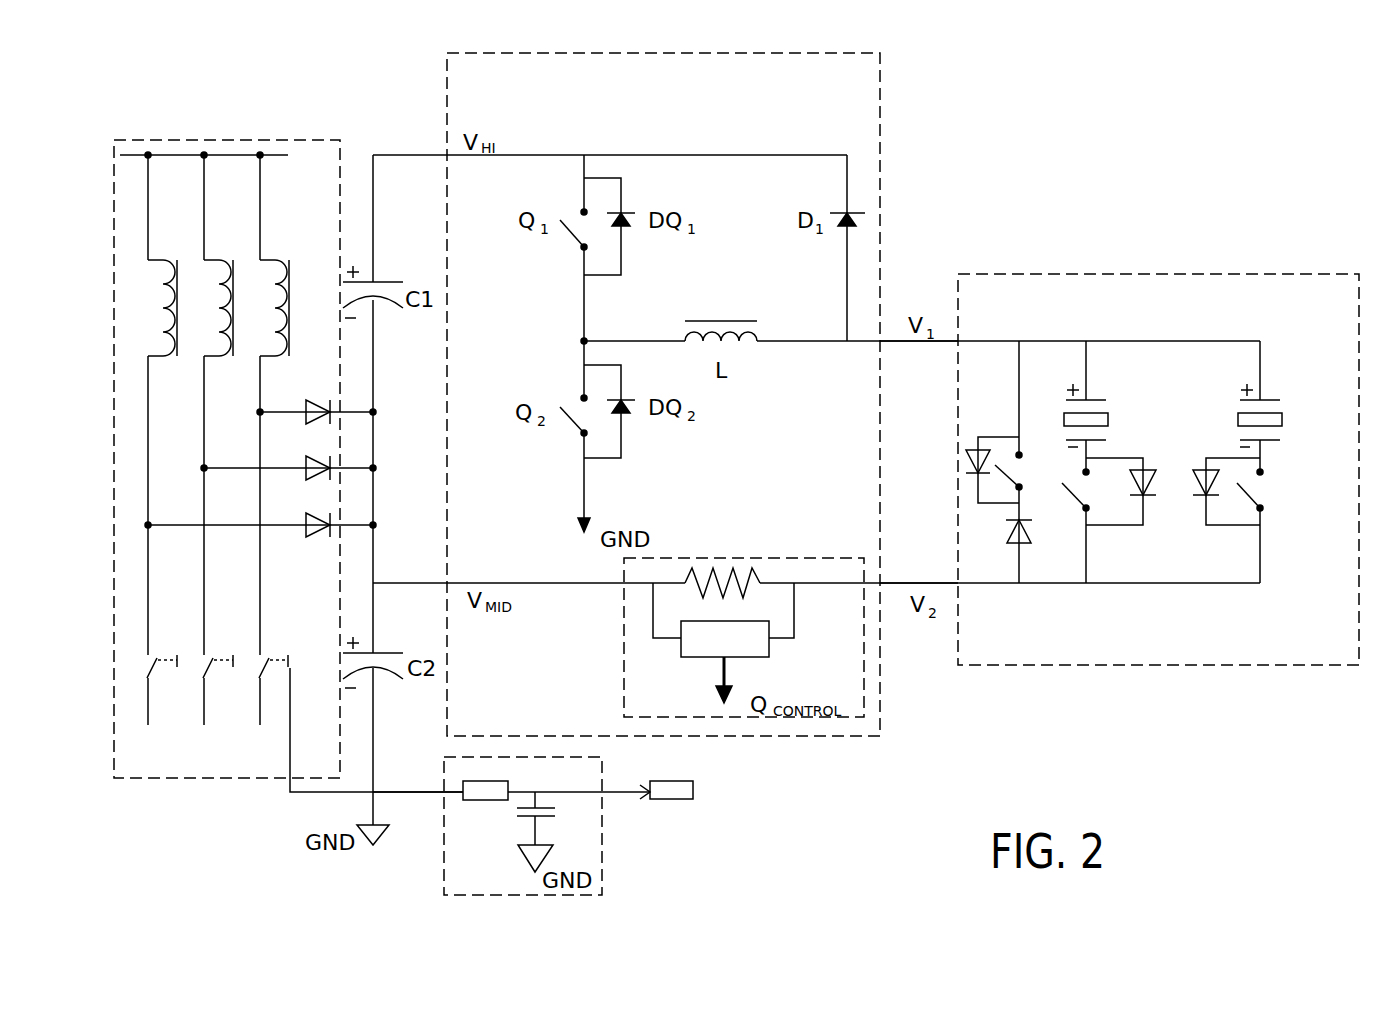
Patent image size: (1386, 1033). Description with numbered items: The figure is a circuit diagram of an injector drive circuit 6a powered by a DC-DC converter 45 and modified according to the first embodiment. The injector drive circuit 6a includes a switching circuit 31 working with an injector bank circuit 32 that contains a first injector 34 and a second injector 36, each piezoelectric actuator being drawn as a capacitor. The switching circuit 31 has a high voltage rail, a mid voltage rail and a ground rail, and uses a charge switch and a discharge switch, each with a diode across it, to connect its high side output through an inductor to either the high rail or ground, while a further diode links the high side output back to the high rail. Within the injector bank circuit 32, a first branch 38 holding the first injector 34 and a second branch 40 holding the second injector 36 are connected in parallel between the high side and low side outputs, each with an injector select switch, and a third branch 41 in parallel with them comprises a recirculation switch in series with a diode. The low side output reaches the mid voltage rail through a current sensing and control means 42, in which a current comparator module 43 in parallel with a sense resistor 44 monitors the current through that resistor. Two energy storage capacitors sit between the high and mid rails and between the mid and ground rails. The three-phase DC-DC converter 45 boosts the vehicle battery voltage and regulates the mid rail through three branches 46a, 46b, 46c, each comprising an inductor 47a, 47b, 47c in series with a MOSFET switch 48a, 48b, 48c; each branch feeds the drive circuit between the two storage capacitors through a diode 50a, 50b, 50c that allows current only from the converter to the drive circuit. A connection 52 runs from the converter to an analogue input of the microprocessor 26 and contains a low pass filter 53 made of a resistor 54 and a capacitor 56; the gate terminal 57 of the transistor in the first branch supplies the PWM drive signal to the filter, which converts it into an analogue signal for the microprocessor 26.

The injector drive circuit 6a is at (989, 361).
The microprocessor 26 is at (706, 804).
The switching circuit 31 is at (734, 380).
The injector bank circuit 32 is at (1160, 422).
The first injector 34 is at (1132, 408).
The second injector 36 is at (1211, 417).
The first branch 38 is at (1131, 439).
The second branch 40 is at (1241, 439).
The third branch 41 is at (1055, 411).
The current sensing and control means 42 is at (744, 608).
The current comparator module 43 is at (678, 643).
The sense resistor 44 is at (764, 556).
The DC-DC converter 45 is at (261, 432).
The first branch of the DC-DC converter 46a is at (307, 161).
The second branch of the DC-DC converter 46b is at (243, 173).
The third branch of the DC-DC converter 46c is at (188, 161).
The inductor 47a is at (297, 308).
The inductor 47b is at (241, 308).
The inductor 47c is at (184, 308).
The switch 48a is at (286, 680).
The switch 48b is at (230, 680).
The switch 48c is at (173, 680).
The diode 50a is at (316, 422).
The diode 50b is at (288, 479).
The diode 50c is at (260, 535).
The connection 52 is at (418, 775).
The low pass filter 53 is at (568, 826).
The resistor 54 is at (440, 841).
The capacitor 56 is at (605, 832).
The gate terminal 57 is at (376, 730).